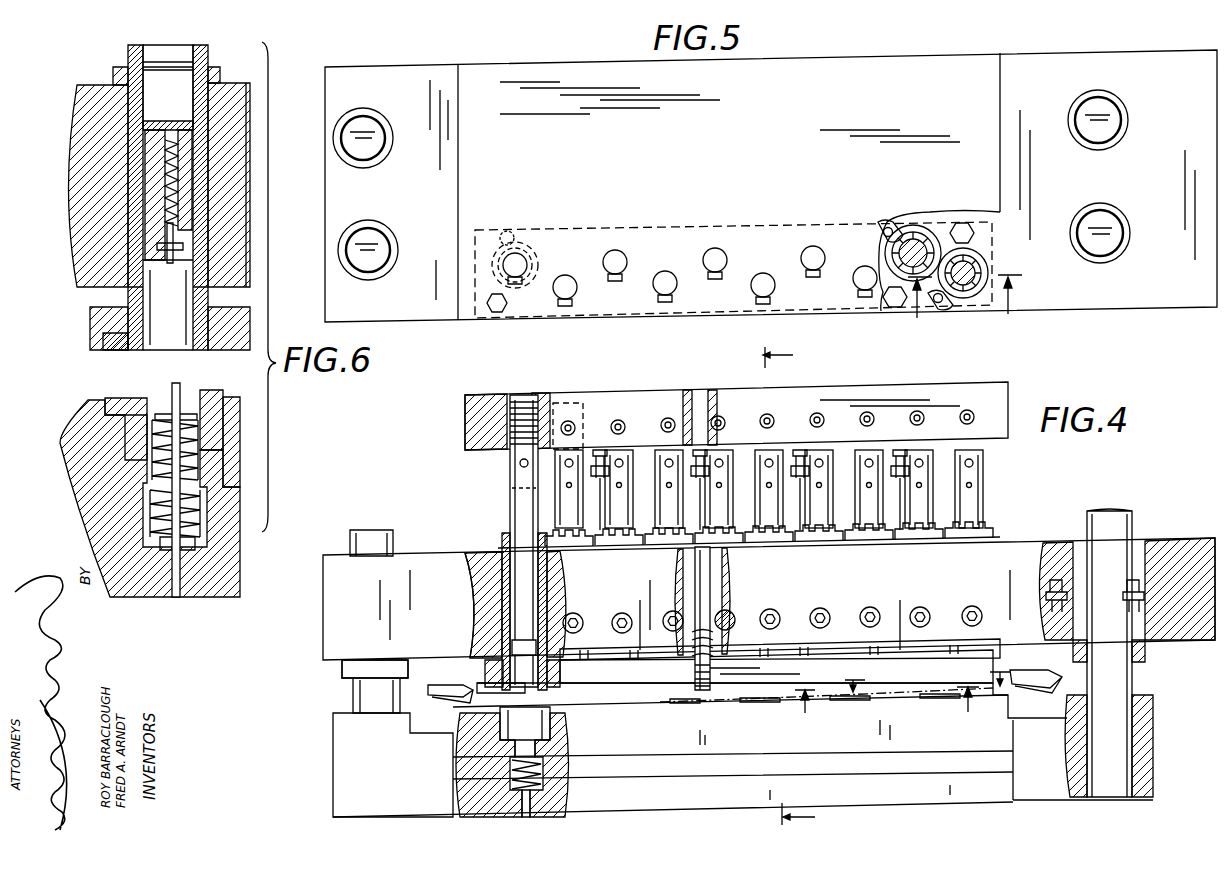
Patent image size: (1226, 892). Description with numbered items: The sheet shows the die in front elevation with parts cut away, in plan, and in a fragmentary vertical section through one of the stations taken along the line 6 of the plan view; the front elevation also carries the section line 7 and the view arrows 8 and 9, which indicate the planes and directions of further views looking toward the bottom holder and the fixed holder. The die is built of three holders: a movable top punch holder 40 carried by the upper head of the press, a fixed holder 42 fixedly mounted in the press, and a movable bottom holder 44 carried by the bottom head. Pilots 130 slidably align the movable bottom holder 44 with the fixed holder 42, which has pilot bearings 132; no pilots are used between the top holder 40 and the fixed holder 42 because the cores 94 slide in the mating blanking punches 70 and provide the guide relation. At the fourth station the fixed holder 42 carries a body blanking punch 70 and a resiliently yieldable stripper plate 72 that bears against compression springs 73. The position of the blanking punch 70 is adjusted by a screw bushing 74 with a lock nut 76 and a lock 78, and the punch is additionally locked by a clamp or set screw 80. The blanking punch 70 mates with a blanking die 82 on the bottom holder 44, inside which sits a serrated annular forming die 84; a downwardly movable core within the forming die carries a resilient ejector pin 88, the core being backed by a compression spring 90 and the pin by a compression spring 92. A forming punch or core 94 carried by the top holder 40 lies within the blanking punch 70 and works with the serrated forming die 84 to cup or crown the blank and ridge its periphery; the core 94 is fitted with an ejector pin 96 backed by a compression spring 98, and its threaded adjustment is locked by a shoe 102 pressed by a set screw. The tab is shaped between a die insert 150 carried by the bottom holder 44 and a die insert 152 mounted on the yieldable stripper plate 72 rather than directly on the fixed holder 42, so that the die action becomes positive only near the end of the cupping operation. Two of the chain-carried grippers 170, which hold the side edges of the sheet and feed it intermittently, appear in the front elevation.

In FIG. 5, the section line 6— 6 is at (961, 305).
In FIG. 4, the section line 7— 7 is at (779, 587).
In FIG. 4, the view arrows 8— 8 is at (927, 670).
In FIG. 4, the view arrows 9— 9 is at (887, 712).
In FIG. 5, the movable top punch holder 40 is at (563, 74).
In FIG. 4, the movable top punch holder 40 is at (915, 397).
In FIG. 6, the fixed holder 42 is at (68, 166).
In FIG. 5, the fixed holder 42 is at (398, 74).
In FIG. 4, the fixed holder 42 is at (1032, 548).
In FIG. 6, the movable bottom holder 44 is at (70, 478).
In FIG. 4, the movable bottom holder 44 is at (1150, 744).
In FIG. 4, the body blanking punch 70 is at (492, 656).
In FIG. 6, the resiliently yieldable stripper plate 72 is at (90, 322).
In FIG. 4, the resiliently yieldable stripper plate 72 is at (747, 670).
In FIG. 4, the compression springs 73 is at (692, 636).
In FIG. 6, the screw bushing 74 is at (128, 58).
In FIG. 5, the screw bushing 74 is at (535, 234).
In FIG. 4, the screw bushing 74 is at (502, 541).
In FIG. 6, the lock nut 76 is at (113, 74).
In FIG. 5, the lock 78 is at (890, 227).
In FIG. 4, the clamp or set screw 80 is at (620, 613).
In FIG. 6, the blanking die 82 is at (221, 395).
In FIG. 6, the serrated annular forming die 84 is at (213, 379).
In FIG. 6, the resilient ejector pin 88 is at (177, 390).
In FIG. 4, the resilient ejector pin 88 is at (527, 710).
In FIG. 6, the compression spring for core 90 is at (193, 537).
In FIG. 4, the compression spring for core 90 is at (513, 782).
In FIG. 6, the compression spring for ejector pin 92 is at (203, 470).
In FIG. 6, the forming punch or core 94 is at (183, 278).
In FIG. 5, the forming punch or core 94 is at (865, 267).
In FIG. 4, the forming punch or core 94 is at (508, 473).
In FIG. 6, the ejector pin 96 is at (172, 263).
In FIG. 4, the ejector pin 96 is at (513, 650).
In FIG. 6, the compression spring 98 is at (165, 146).
In FIG. 5, the shoe 102 is at (670, 293).
In FIG. 5, the pilots 130 is at (378, 140).
In FIG. 4, the pilots 130 is at (387, 514).
In FIG. 4, the pilot bearings 132 is at (343, 674).
In FIG. 6, the die insert 150 is at (113, 398).
In FIG. 6, the die insert 152 is at (110, 334).
In FIG. 4, the die insert 152 is at (500, 688).
In FIG. 4, the chain-carried grippers 170 is at (447, 685).